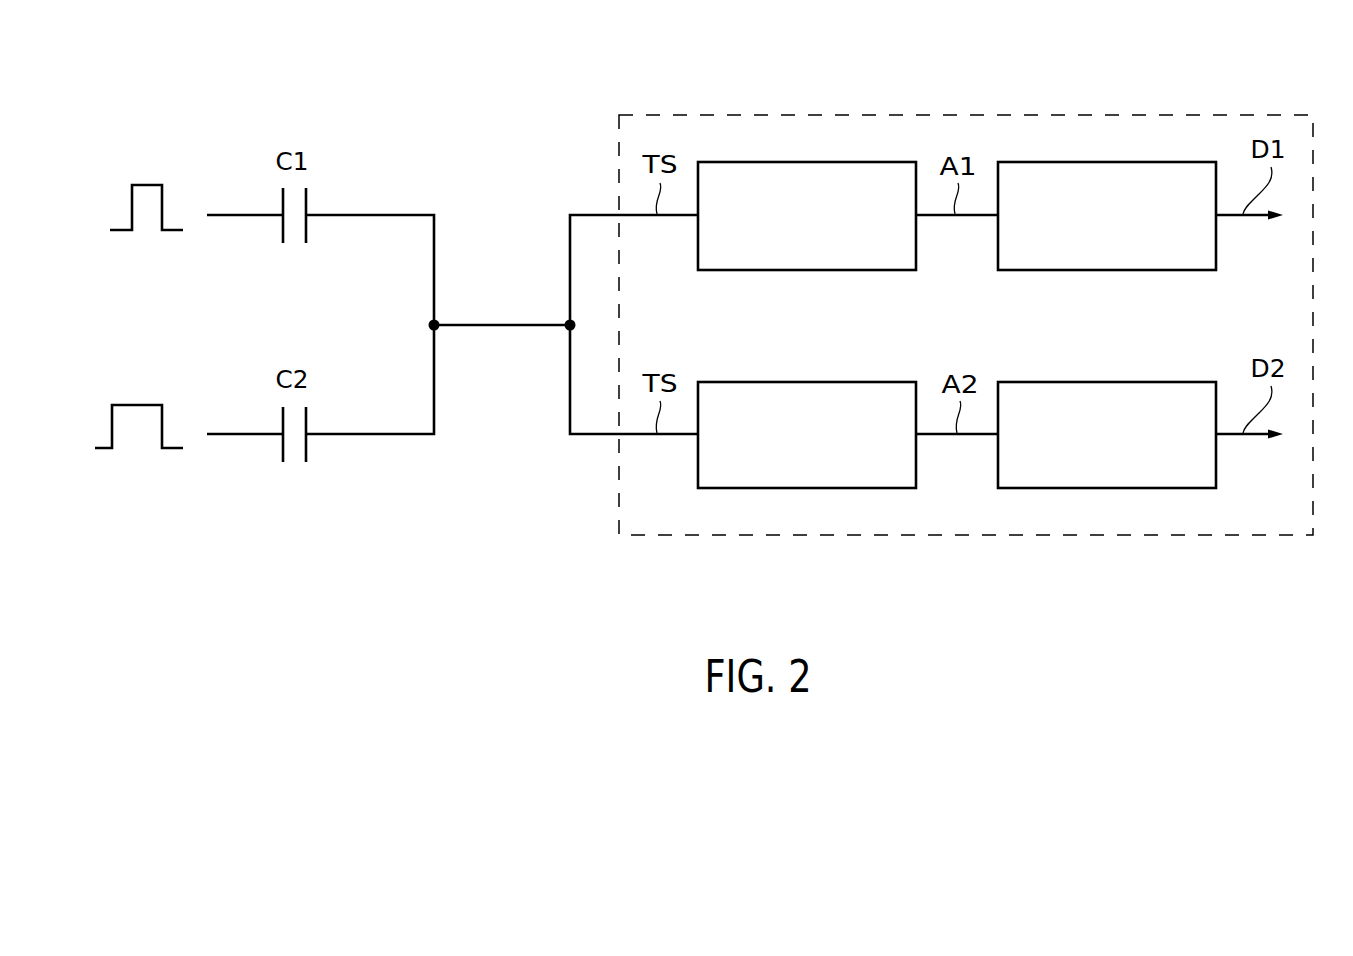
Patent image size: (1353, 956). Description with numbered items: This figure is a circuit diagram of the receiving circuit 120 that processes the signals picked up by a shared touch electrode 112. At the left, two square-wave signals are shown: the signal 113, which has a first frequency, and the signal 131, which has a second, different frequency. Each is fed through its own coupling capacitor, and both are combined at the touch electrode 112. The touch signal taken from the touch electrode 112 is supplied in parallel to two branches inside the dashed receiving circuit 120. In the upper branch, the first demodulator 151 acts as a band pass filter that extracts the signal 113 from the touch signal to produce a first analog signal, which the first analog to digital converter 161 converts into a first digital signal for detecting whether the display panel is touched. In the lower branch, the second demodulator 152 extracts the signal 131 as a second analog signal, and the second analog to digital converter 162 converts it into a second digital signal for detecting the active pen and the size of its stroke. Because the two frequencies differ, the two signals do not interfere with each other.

The signal 113 is at (145, 184).
The signal 131 is at (135, 404).
The touch electrode 112 is at (503, 329).
The receiving circuit 120 is at (807, 114).
The first demodulator 151 is at (783, 231).
The second demodulator 152 is at (783, 450).
The first analog to digital converter 161 is at (1083, 230).
The second analog to digital converter 162 is at (1128, 450).